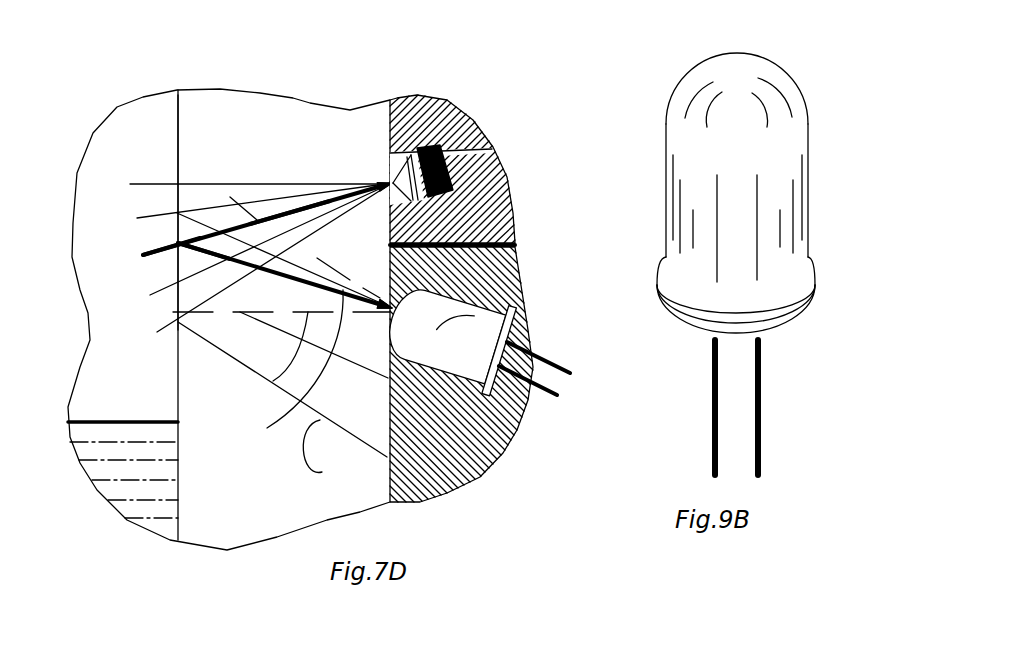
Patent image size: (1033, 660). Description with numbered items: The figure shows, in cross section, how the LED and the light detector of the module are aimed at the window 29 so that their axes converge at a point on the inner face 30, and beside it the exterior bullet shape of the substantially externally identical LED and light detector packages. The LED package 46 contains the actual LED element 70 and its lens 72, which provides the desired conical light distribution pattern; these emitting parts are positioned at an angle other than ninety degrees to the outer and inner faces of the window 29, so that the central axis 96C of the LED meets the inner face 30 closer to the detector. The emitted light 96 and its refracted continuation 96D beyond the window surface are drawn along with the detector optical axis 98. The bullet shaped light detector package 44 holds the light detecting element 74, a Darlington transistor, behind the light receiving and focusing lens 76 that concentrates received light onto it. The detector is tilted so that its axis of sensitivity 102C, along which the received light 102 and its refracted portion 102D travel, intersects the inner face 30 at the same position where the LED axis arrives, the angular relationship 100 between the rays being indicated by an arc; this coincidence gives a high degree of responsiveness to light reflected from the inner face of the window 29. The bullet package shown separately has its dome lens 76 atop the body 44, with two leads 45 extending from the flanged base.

In FIG. 7D, the window 29 is at (161, 315).
In FIG. 7D, the inner face of window 30 is at (178, 133).
In FIG. 7D, the detector optical axis 98 is at (155, 182).
In FIG. 7D, the reflected light ray 96 is at (227, 183).
In FIG. 7D, the central axis of the LED 96C is at (298, 207).
In FIG. 7D, the point of intersection position 96D is at (176, 255).
In FIG. 7D, the emitted light ray 102 is at (273, 381).
In FIG. 7D, the axis of sensitivity of the detector 102C is at (267, 428).
In FIG. 7D, the refracted emitted ray 102D is at (175, 243).
In FIG. 7D, the angle indication 100 is at (334, 451).
In FIG. 7D, the LED package 46 is at (503, 160).
In FIG. 7D, the light detector package 44 is at (503, 453).
In FIG. 9B, the light detector package 44 is at (703, 280).
In FIG. 7D, the lens 72 is at (397, 104).
In FIG. 7D, the LED element 70 is at (470, 158).
In FIG. 7D, the light receiving and focusing lens 76 is at (423, 290).
In FIG. 9B, the light receiving and focusing lens 76 is at (695, 98).
In FIG. 7D, the light detecting element 74 is at (517, 314).
In FIG. 9B, the LED leads 45 is at (763, 373).